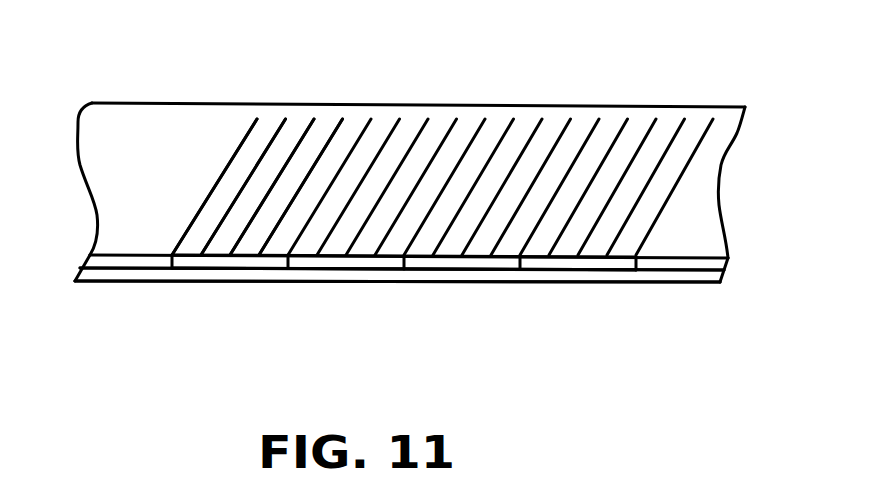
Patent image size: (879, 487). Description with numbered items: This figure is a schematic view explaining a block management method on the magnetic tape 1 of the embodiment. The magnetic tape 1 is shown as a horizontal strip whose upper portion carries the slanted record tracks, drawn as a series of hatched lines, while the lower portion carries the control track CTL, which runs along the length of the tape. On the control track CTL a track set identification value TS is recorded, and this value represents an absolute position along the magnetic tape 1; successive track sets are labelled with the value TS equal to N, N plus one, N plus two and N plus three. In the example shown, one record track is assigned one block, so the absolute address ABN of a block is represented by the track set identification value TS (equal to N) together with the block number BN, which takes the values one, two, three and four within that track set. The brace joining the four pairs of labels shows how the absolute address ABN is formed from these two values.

The magnetic tape 1 is at (580, 103).
The control track CTL is at (120, 272).
The track set identification value TS is at (233, 262).
The absolute address ABN is at (503, 78).